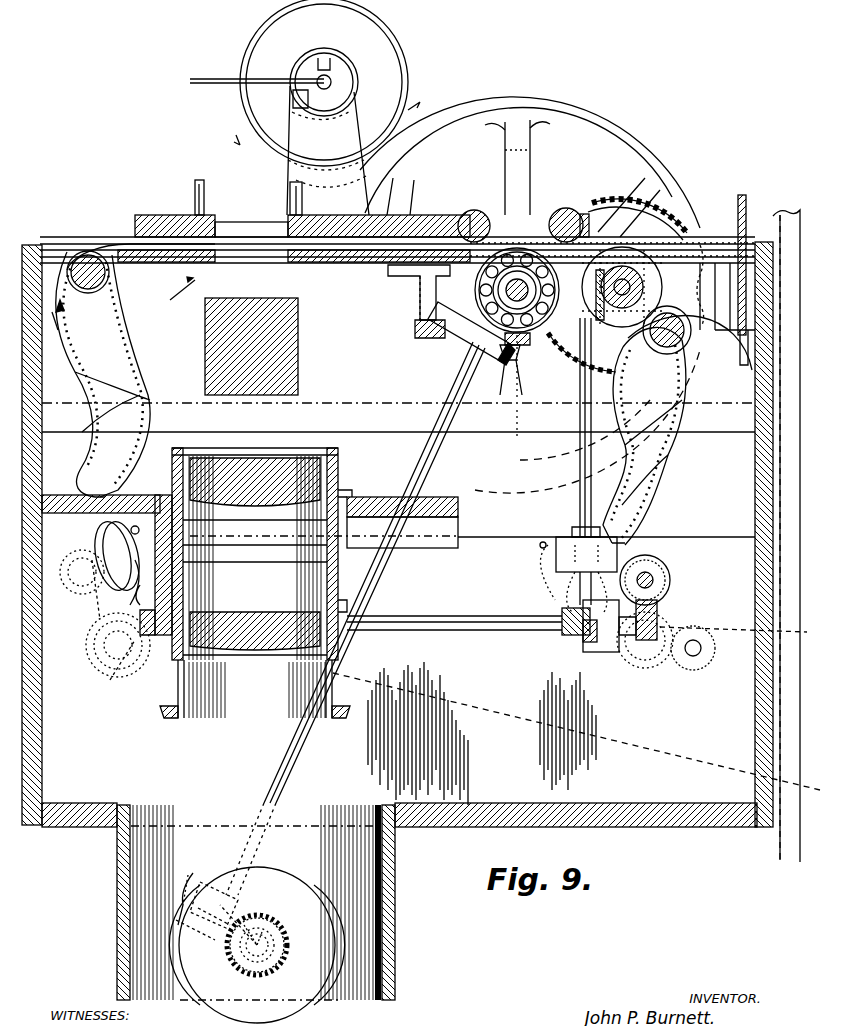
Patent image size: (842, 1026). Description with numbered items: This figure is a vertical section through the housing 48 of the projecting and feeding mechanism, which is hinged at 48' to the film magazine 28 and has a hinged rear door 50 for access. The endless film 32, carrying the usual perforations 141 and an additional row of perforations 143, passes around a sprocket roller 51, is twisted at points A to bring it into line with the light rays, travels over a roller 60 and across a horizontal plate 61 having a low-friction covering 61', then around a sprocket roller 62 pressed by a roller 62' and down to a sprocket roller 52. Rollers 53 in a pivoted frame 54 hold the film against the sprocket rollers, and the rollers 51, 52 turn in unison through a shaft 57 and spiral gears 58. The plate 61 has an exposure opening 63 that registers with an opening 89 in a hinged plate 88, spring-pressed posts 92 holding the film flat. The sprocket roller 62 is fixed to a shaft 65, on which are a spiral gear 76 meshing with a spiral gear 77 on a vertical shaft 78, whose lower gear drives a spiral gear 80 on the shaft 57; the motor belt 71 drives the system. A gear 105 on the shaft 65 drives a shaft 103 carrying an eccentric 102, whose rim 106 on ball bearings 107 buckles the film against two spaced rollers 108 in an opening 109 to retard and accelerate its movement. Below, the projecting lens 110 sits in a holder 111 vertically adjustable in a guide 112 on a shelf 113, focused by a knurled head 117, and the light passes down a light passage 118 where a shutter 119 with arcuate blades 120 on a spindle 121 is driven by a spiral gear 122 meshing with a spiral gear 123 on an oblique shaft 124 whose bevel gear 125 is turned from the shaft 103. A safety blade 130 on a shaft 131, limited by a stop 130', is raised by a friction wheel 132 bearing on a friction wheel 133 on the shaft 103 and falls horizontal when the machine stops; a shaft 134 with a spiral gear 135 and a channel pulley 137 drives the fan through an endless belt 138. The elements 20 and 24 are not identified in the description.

The table 20 is at (245, 243).
The block 24 is at (298, 375).
The film magazine 28 is at (784, 223).
The film 32 is at (112, 337).
The housing 48 is at (399, 825).
The hinge 48' is at (751, 534).
The hinged rear door 50 is at (42, 772).
The sprocket roller 51 is at (706, 575).
The sprocket roller 52 is at (660, 550).
The spaced rollers 53 is at (105, 654).
The frame 54 is at (99, 620).
The shaft 57 is at (448, 630).
The spiral gears 58 is at (138, 660).
The roller 60 is at (104, 280).
The horizontal plate 61 is at (379, 258).
The covering 61' is at (181, 289).
The sprocket roller 62 is at (654, 258).
The roller 62' is at (684, 343).
The rectangular opening 63 is at (236, 262).
The shaft 65 is at (636, 290).
The endless belt 71 is at (562, 636).
The spiral gear 76 is at (726, 296).
The spiral gear 77 is at (572, 324).
The vertical shaft 78 is at (580, 394).
The spiral gear 80 is at (594, 652).
The plate 88 is at (156, 215).
The rectangular opening 89 is at (222, 225).
The posts 92 is at (197, 186).
The eccentric 102 is at (512, 360).
The shaft 103 is at (520, 248).
The gear 105 is at (626, 262).
The rim 106 is at (498, 250).
The ball bearings 107 is at (476, 343).
The spaced rollers 108 is at (468, 212).
The opening 109 is at (516, 222).
The projecting lens 110 is at (309, 583).
The holder 111 is at (352, 680).
The guide 112 is at (352, 556).
The shelf 113 is at (458, 513).
The knurled head 117 is at (102, 535).
The light passage 118 is at (398, 898).
The shutter 119 is at (316, 975).
The arcuate blades 120 is at (277, 897).
The spindle 121 is at (257, 920).
The spiral gear 122 is at (289, 946).
The spiral gear 123 is at (180, 882).
The obliquely disposed shaft 124 is at (294, 769).
The bevel gear 125 is at (470, 277).
The blade 130 is at (257, 99).
The stop 130' is at (282, 105).
The shaft 131 is at (336, 93).
The friction wheel 132 is at (404, 56).
The friction wheel 133 is at (568, 112).
The shaft 134 is at (428, 326).
The spiral gear 135 is at (504, 397).
The channel pulley 137 is at (736, 375).
The endless belt 138 is at (746, 198).
The perforations 141 is at (108, 394).
The perforations 143 is at (106, 322).
The twist points A is at (128, 378).